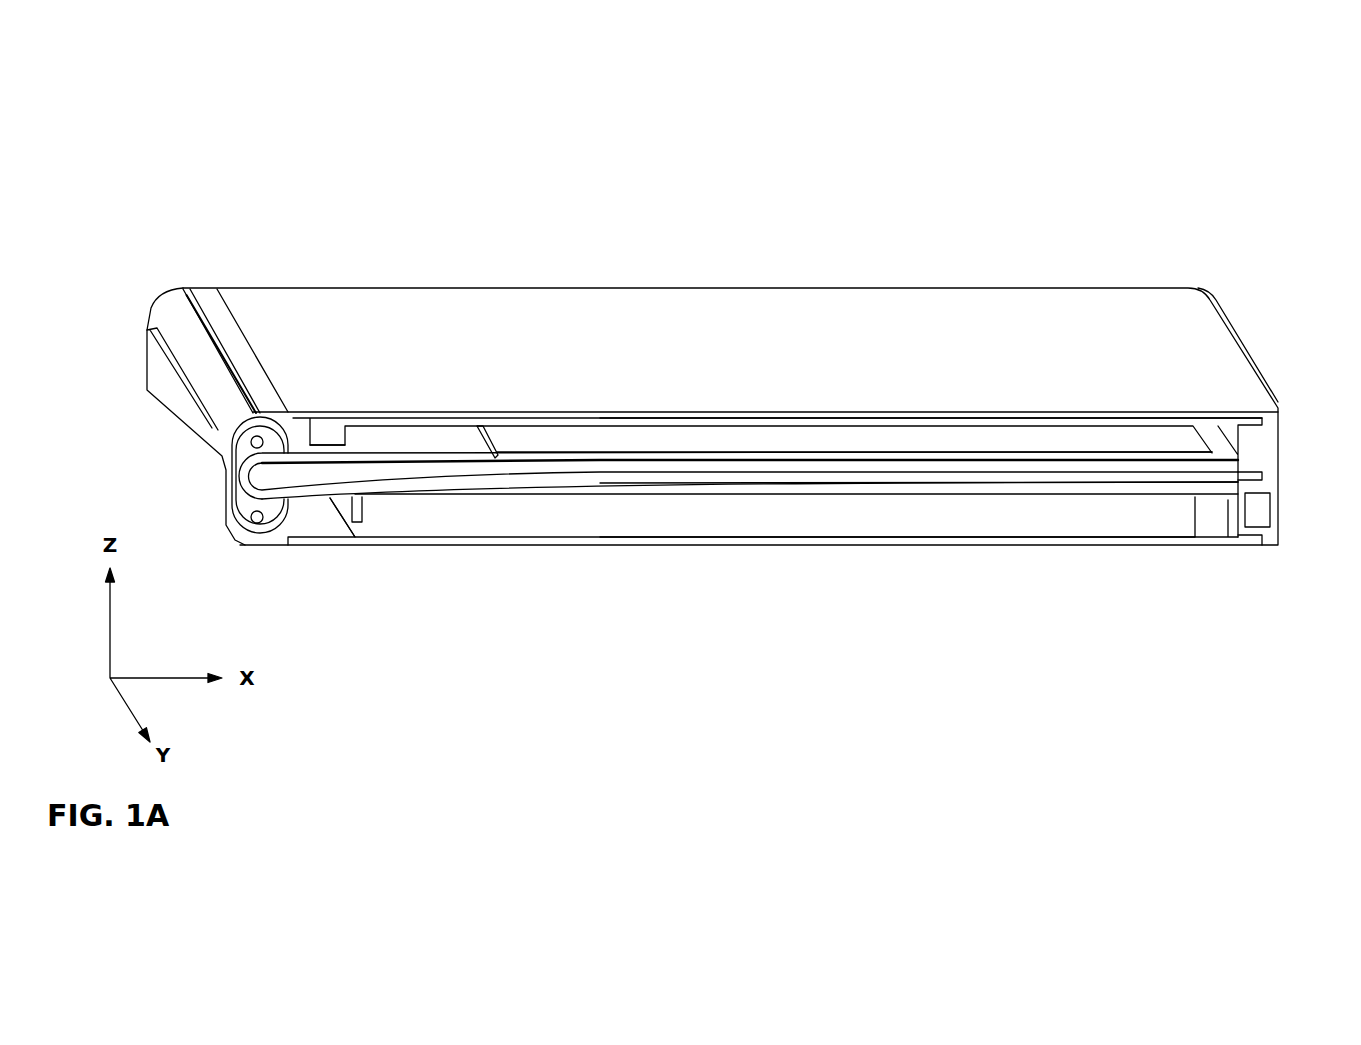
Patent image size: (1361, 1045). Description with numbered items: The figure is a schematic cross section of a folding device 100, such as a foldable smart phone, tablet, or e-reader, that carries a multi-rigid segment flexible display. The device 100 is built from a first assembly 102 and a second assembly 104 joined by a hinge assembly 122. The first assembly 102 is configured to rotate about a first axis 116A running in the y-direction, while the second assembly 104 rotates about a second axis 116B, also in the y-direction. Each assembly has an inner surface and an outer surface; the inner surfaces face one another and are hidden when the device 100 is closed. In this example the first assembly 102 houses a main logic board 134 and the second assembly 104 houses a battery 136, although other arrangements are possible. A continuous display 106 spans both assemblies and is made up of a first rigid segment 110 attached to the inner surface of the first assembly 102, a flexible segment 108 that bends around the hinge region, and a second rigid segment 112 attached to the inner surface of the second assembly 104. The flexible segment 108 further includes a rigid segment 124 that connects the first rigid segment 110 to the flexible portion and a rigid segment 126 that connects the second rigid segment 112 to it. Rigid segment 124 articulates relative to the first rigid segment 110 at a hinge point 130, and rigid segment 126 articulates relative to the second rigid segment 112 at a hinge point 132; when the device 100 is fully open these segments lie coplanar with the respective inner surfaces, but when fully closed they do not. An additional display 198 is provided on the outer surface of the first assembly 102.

The device 100 is at (1268, 245).
The first assembly 102 is at (1280, 430).
The second assembly 104 is at (1275, 528).
The continuous display 106 is at (1230, 470).
The flexible segment 108 is at (216, 487).
The first rigid segment 110 is at (723, 440).
The second rigid segment 112 is at (724, 511).
The first axis 116A is at (252, 441).
The second axis 116B is at (258, 524).
The hinge assembly 122 is at (160, 373).
The rigid segment 124 is at (327, 430).
The rigid segment 126 is at (329, 521).
The hinge point 130 is at (407, 450).
The hinge point 132 is at (408, 498).
The main logic board 134 is at (829, 424).
The battery 136 is at (890, 510).
The display 198 is at (1008, 297).